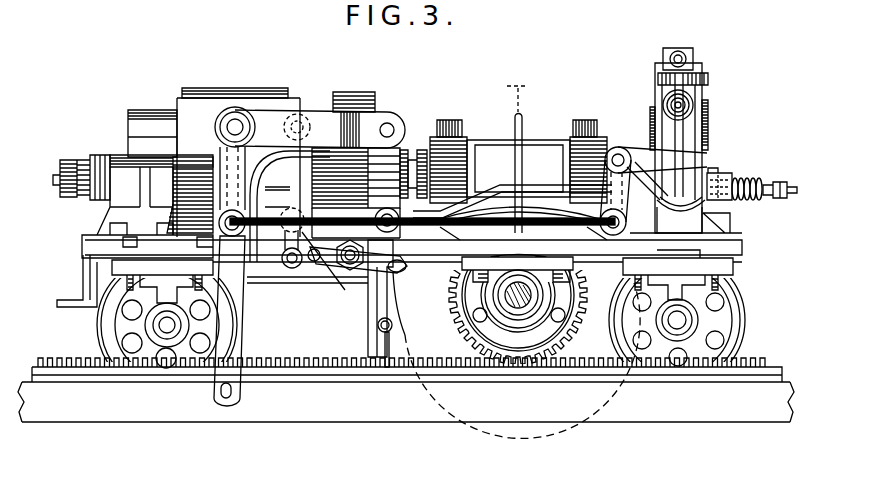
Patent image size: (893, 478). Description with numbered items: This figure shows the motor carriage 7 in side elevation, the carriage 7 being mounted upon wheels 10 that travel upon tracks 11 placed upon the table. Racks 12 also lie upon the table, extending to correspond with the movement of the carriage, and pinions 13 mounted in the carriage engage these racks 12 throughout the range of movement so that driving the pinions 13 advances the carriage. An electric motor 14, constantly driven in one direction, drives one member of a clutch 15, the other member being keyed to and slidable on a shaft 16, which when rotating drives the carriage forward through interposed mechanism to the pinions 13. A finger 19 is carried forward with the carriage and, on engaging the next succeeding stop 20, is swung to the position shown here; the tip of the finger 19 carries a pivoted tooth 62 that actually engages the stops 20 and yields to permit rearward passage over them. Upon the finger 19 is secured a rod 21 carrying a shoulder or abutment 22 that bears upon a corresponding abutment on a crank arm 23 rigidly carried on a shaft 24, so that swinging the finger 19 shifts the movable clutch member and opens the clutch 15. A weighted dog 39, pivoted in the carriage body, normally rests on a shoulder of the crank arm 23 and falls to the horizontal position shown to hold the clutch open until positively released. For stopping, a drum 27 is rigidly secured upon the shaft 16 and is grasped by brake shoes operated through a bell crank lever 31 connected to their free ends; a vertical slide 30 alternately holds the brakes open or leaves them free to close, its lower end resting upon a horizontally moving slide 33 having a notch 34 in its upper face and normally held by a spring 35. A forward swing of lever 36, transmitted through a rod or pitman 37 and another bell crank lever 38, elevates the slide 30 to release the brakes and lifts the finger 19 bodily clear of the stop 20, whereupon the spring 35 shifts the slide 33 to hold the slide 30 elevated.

The carriage 7 is at (744, 246).
The wheels 10 is at (96, 326).
The tracks 11 is at (740, 407).
The racks 12 is at (594, 367).
The pinions 13 is at (500, 372).
The motor 14 is at (214, 98).
The clutch 15 is at (376, 104).
The shaft 16 is at (413, 152).
The finger 19 is at (375, 308).
The stops 20 is at (101, 369).
The rod 21 is at (498, 177).
The shoulder or abutment 22 is at (311, 250).
The crank arm 23 is at (296, 163).
The shaft 24 is at (286, 112).
The drum 27 is at (705, 115).
The slide 30 is at (684, 140).
The bell crank lever 31 is at (695, 58).
The slide 33 is at (704, 203).
The notch 34 is at (690, 187).
The spring 35 is at (756, 180).
The lever 36 is at (241, 304).
The rod or pitman 37 is at (523, 220).
The bell crank lever 38 is at (630, 150).
The dog 39 is at (332, 258).
The tooth 62 is at (390, 340).